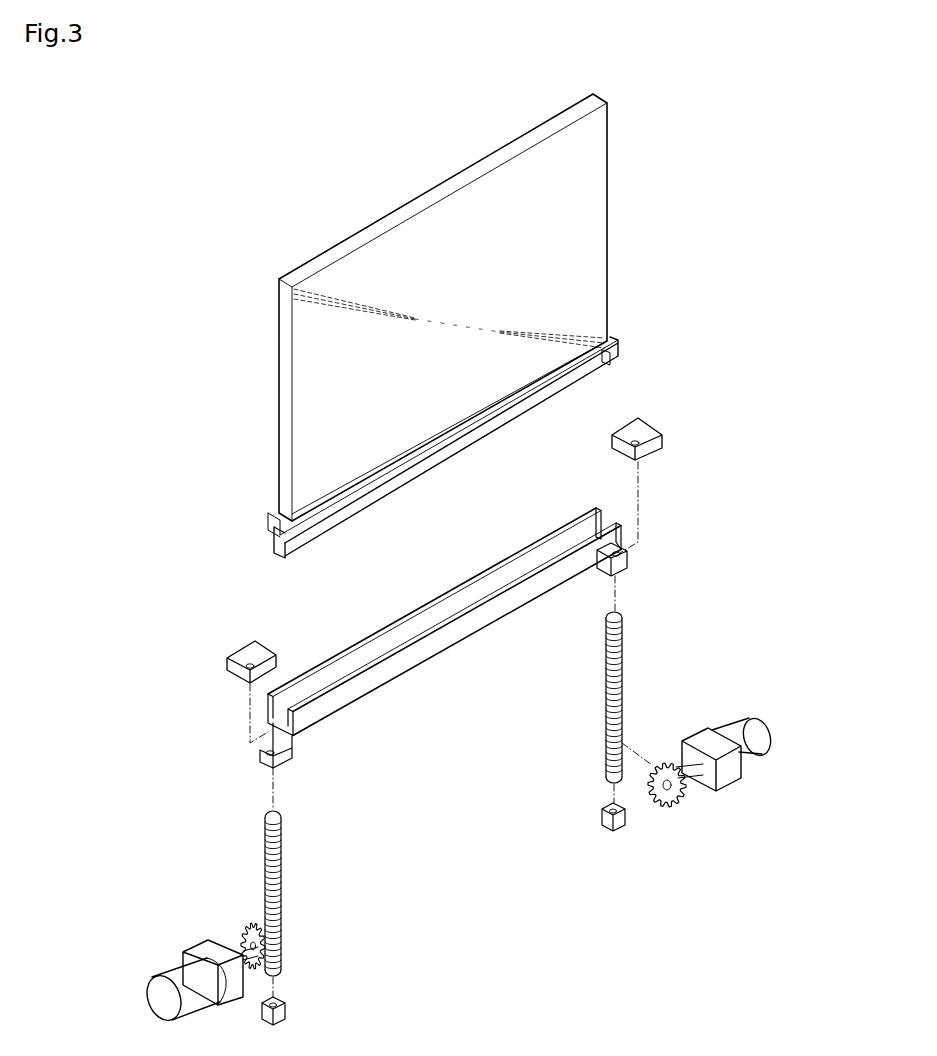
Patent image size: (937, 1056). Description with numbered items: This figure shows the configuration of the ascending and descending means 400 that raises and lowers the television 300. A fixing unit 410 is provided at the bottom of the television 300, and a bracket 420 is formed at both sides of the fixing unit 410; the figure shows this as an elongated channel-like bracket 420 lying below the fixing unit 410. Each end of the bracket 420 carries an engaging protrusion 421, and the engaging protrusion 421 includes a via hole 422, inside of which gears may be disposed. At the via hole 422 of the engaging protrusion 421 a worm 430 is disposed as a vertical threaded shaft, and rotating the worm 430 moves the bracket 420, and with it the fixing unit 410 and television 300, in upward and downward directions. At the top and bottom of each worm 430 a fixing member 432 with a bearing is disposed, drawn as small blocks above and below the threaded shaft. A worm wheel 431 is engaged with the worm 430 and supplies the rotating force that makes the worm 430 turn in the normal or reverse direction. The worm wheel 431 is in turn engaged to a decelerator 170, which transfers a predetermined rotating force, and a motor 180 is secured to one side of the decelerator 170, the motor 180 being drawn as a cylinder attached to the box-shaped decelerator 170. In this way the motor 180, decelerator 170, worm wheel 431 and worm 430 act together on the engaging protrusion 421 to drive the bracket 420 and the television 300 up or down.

The television 300 is at (593, 208).
The fixing unit 410 is at (620, 349).
The bracket 420 is at (437, 648).
The engaging protrusion 421 is at (298, 750).
The via hole 422 is at (263, 768).
The worm 430 is at (624, 668).
The worm wheel 431 is at (657, 768).
The fixing member 432 is at (262, 650).
The gear box 170 is at (722, 779).
The motor 180 is at (748, 752).
The ascending and descending means 400 is at (437, 810).